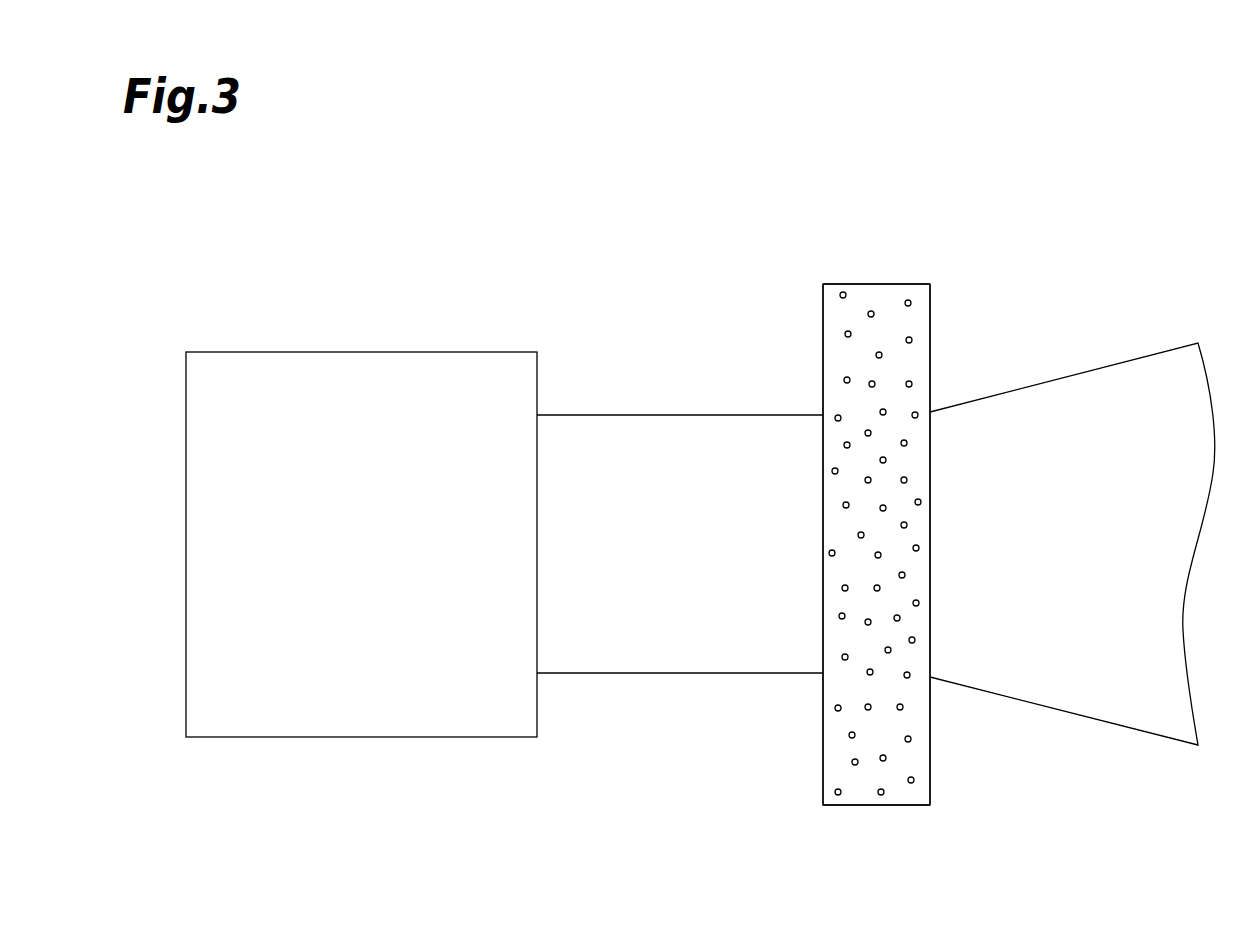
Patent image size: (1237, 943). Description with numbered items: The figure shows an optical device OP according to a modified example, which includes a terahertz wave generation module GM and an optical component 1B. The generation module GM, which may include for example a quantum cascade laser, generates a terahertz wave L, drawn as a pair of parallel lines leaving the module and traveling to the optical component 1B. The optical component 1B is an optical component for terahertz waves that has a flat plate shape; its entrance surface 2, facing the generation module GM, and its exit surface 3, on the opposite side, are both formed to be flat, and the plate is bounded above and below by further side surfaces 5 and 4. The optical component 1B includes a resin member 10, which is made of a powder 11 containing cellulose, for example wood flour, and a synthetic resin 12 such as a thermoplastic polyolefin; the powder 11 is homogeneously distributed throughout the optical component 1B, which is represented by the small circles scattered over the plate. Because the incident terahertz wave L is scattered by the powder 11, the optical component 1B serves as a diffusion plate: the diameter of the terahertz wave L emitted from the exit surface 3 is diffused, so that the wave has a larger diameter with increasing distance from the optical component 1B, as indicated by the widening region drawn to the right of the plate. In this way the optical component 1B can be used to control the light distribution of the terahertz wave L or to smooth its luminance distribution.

The terahertz wave generation module GM is at (444, 352).
The terahertz wave L is at (599, 415).
The optical component 1B is at (932, 296).
The upper side surface 5 is at (863, 284).
The entrance surface 2 is at (823, 750).
The exit surface 3 is at (930, 748).
The lower side surface 4 is at (873, 808).
The resin member 10 is at (985, 303).
The powder 11 is at (912, 384).
The synthetic resin 12 is at (907, 323).
The optical device OP is at (1057, 199).